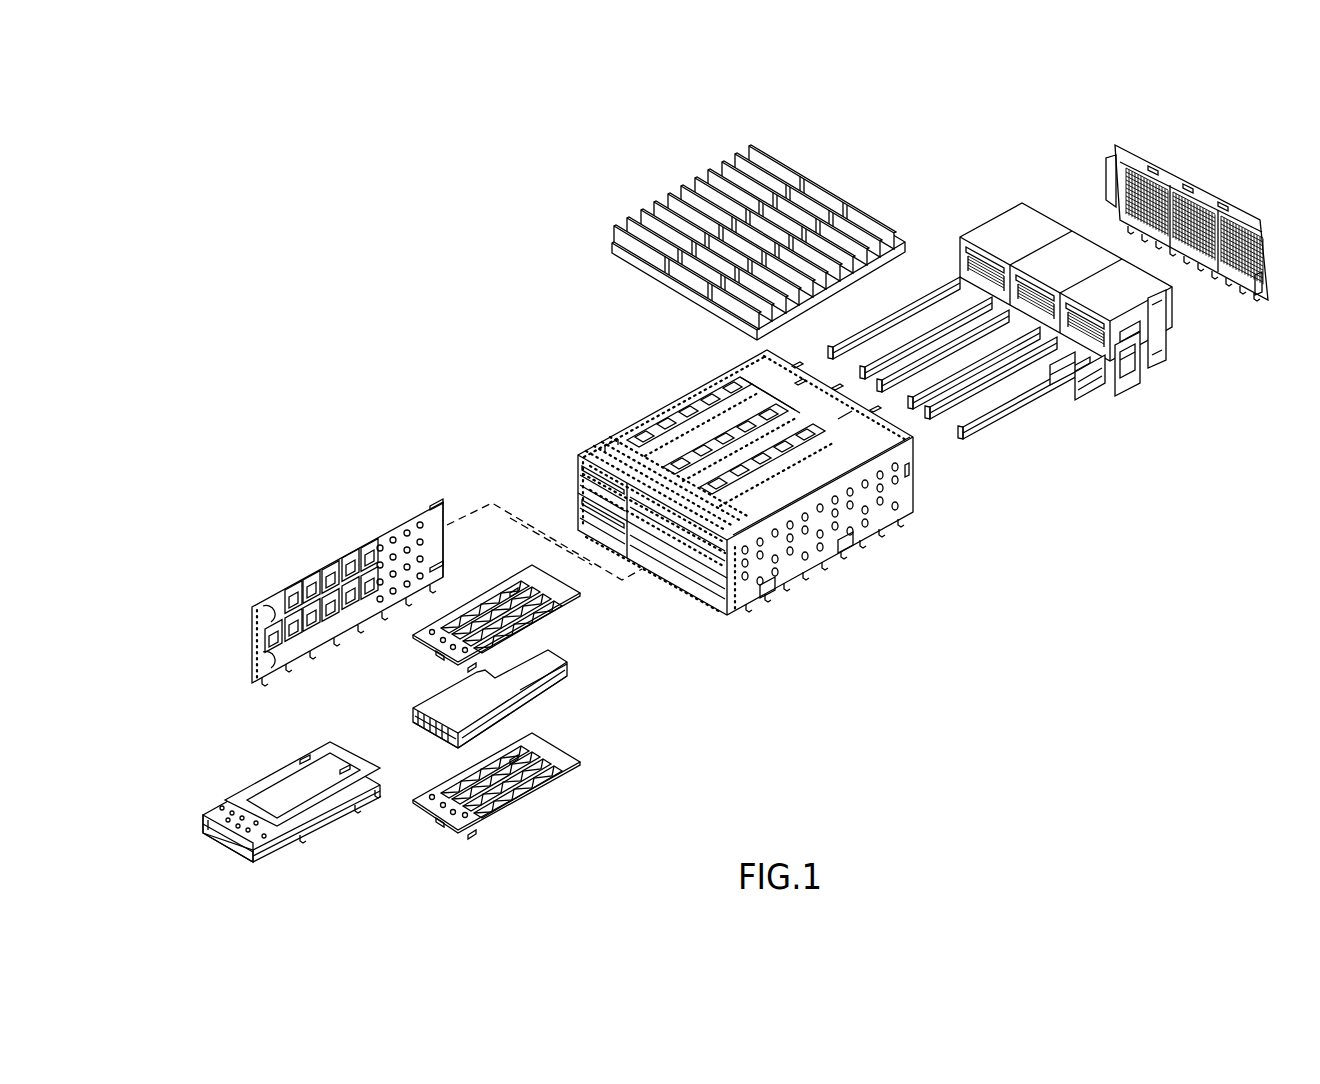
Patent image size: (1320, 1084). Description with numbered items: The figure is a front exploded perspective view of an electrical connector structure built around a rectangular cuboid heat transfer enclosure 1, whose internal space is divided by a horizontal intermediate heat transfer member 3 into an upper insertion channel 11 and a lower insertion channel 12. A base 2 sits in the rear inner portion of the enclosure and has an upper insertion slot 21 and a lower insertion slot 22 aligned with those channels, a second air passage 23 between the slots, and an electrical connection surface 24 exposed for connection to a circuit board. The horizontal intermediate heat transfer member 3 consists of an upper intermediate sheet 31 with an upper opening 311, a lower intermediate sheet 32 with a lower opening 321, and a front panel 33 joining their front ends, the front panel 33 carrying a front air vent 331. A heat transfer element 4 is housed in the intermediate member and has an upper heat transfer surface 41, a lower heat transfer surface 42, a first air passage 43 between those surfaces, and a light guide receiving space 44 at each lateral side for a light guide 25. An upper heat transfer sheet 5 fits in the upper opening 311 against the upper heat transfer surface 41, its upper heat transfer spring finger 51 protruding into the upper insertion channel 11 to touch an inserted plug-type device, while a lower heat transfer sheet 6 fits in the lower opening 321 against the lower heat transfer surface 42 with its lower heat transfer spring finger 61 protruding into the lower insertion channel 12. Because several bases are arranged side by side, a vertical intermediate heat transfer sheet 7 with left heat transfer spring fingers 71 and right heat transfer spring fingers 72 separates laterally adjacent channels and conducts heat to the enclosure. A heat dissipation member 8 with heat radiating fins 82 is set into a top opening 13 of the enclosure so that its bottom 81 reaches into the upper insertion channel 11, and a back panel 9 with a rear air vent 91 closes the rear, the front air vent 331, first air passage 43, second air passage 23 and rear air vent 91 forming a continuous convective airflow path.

The heat transfer enclosure 1 is at (700, 467).
The upper insertion channel 11 is at (576, 465).
The lower insertion channel 12 is at (576, 512).
The top opening 13 is at (660, 400).
The base 2 is at (1013, 326).
The upper insertion slot 21 is at (1127, 392).
The lower insertion slot 22 is at (1088, 403).
The second air passage 23 is at (1060, 388).
The electrical connection surface 24 is at (1158, 372).
The light guide 25 is at (945, 418).
The horizontal intermediate heat transfer member 3 is at (268, 761).
The upper intermediate sheet 31 is at (270, 767).
The upper opening 311 is at (277, 770).
The lower intermediate sheet 32 is at (315, 812).
The lower opening 321 is at (323, 814).
The front panel 33 is at (188, 825).
The front air vent 331 is at (207, 829).
The heat transfer element 4 is at (488, 717).
The upper heat transfer surface 41 is at (463, 698).
The lower heat transfer surface 42 is at (452, 746).
The first air passage 43 is at (420, 733).
The light guide receiving space 44 is at (418, 712).
The upper heat transfer sheet 5 is at (527, 600).
The upper heat transfer spring finger 51 is at (493, 605).
The lower heat transfer sheet 6 is at (519, 803).
The lower heat transfer spring finger 61 is at (535, 802).
The vertical intermediate heat transfer sheet 7 is at (307, 594).
The left heat transfer spring finger 71 is at (330, 565).
The right heat transfer spring finger 72 is at (333, 560).
The heat dissipation member 8 is at (728, 237).
The bottom 81 is at (622, 276).
The heat radiating fin 82 is at (720, 176).
The back panel 9 is at (1194, 241).
The rear air vent 91 is at (1214, 272).